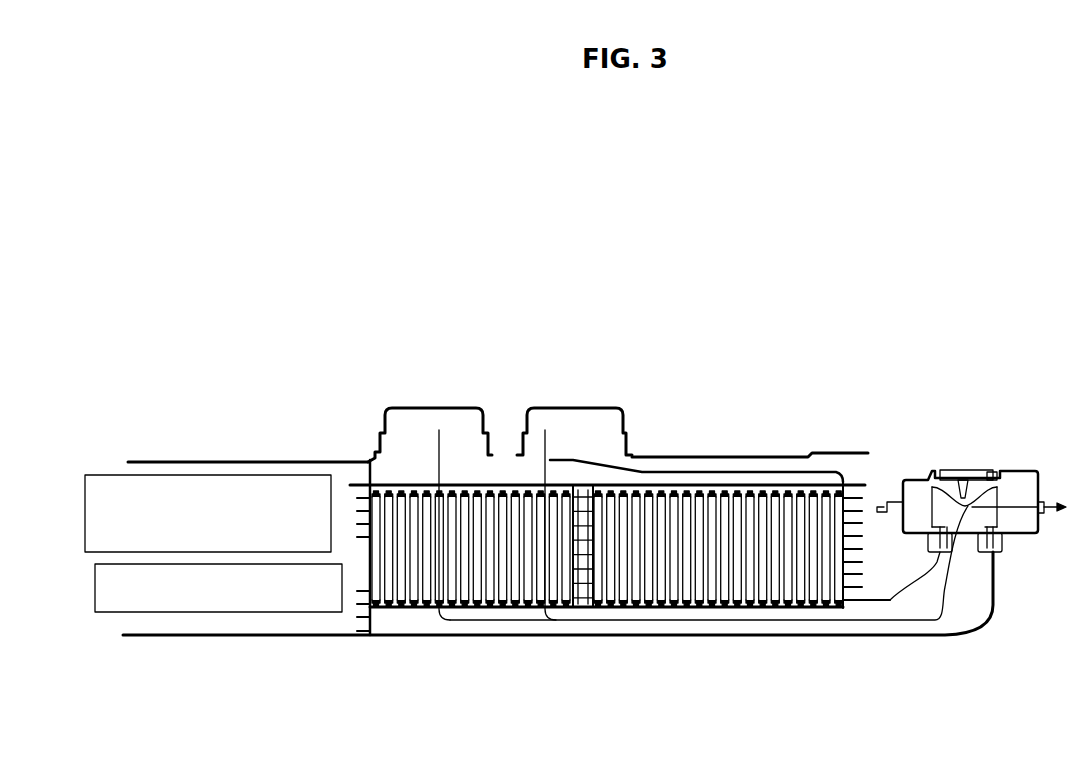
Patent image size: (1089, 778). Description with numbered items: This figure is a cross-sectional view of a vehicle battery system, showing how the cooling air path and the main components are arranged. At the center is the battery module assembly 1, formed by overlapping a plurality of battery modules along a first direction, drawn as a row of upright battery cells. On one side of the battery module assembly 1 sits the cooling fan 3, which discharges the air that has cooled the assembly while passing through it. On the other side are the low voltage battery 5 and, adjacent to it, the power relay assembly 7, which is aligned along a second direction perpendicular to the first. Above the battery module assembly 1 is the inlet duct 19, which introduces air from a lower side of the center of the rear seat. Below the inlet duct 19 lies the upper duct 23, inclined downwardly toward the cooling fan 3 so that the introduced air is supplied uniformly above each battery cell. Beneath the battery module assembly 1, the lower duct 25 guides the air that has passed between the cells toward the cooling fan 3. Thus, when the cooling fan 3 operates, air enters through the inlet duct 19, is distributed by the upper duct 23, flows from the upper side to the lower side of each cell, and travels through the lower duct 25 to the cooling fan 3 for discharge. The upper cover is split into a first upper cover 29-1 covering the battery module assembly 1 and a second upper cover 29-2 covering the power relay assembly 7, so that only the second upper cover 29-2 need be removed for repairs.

The battery module assembly 1 is at (517, 600).
The cooling fan 3 is at (990, 445).
The low voltage battery 5 is at (238, 612).
The power relay assembly 7 is at (196, 487).
The inlet duct 19 is at (593, 407).
The upper duct 23 is at (657, 470).
The lower duct 25 is at (770, 635).
The first upper cover 29-1 is at (760, 456).
The second upper cover 29-2 is at (283, 462).